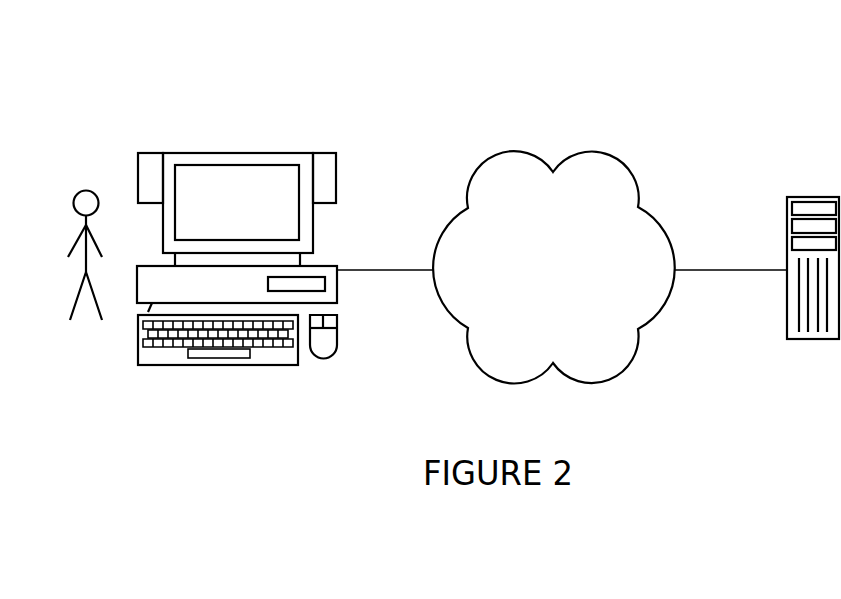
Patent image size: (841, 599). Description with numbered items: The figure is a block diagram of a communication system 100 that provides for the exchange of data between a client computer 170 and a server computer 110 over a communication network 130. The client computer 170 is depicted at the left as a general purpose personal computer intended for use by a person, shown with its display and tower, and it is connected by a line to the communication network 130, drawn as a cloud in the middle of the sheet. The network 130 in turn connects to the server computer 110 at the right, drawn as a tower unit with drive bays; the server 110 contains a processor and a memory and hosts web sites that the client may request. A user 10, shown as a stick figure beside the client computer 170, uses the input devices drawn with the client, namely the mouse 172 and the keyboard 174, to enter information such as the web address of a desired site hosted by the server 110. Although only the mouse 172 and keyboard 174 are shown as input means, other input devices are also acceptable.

The user 10 is at (78, 188).
The communication system 100 is at (528, 56).
The server computer 110 is at (808, 197).
The communication network 130 is at (605, 157).
The client computer 170 is at (337, 168).
The mouse 172 is at (332, 358).
The keyboard 174 is at (185, 365).